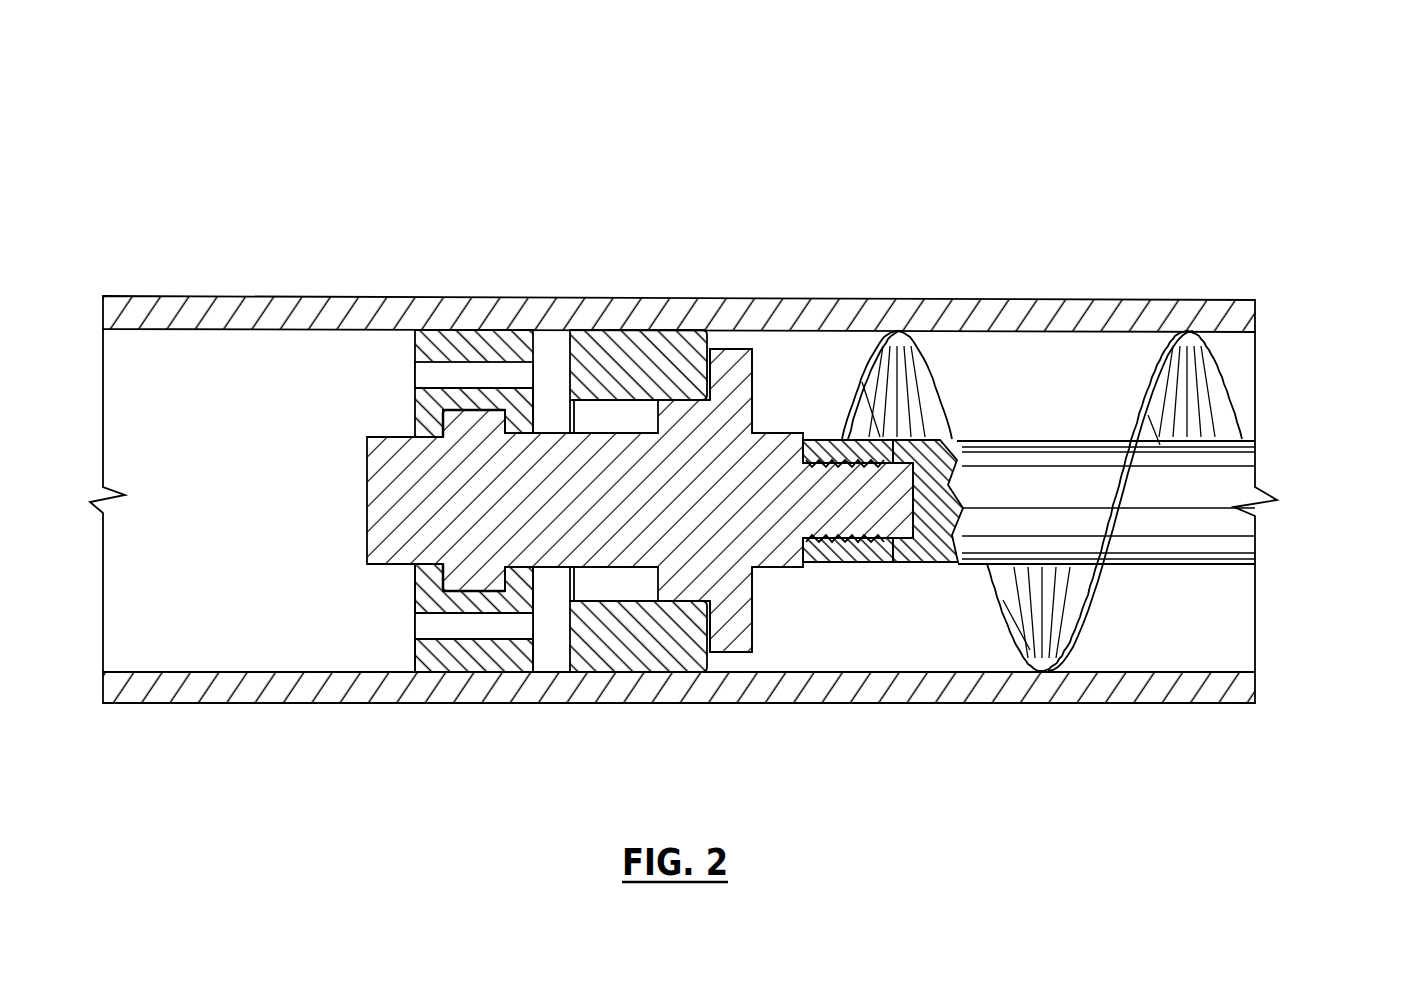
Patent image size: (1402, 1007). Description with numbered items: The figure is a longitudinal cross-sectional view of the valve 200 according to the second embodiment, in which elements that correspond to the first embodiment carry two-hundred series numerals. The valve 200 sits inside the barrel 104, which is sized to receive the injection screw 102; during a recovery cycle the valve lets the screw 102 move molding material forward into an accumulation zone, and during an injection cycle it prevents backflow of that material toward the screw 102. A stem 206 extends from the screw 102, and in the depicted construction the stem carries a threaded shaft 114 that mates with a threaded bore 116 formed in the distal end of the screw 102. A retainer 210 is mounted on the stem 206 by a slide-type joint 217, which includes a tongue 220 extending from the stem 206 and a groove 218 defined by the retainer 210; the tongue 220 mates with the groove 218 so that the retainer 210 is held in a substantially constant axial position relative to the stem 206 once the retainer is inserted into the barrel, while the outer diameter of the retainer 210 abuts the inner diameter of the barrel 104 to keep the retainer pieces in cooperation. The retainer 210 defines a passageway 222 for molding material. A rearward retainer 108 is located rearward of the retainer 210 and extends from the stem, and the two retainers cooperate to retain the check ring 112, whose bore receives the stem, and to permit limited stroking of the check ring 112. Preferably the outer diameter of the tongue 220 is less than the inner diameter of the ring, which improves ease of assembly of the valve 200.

The valve 200 is at (723, 124).
The injection screw 102 is at (1213, 528).
The barrel 104 is at (1137, 313).
The rearward retainer 108 is at (735, 349).
The check ring 112 is at (634, 370).
The threaded shaft 114 is at (839, 445).
The threaded bore 116 is at (876, 470).
The stem 206 is at (615, 470).
The retainer 210 is at (440, 345).
The slide-type joint 217 is at (233, 545).
The groove 218 is at (518, 400).
The tongue 220 is at (437, 418).
The passageway 222 is at (470, 632).